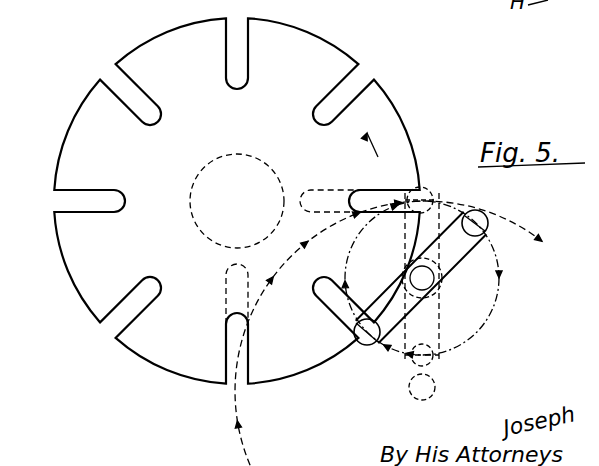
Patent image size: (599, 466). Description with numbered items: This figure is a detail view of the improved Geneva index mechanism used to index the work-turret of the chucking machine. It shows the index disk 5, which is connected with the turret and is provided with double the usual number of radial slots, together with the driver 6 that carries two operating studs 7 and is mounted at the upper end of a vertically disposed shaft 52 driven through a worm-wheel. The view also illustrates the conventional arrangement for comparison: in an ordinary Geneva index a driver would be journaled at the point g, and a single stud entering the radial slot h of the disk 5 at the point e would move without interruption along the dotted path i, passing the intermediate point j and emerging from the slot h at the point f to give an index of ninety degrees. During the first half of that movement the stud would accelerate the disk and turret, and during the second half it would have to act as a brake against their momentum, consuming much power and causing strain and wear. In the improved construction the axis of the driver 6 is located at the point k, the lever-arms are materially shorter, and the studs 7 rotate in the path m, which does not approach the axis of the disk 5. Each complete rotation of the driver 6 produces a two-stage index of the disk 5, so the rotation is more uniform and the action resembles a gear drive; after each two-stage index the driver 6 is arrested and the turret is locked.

The index disk 5 is at (236, 200).
The driver 6 is at (455, 268).
The operating studs 7 is at (368, 345).
The vertically disposed shaft 52 is at (433, 289).
The slot entry point e is at (240, 388).
The slot exit point f is at (412, 210).
The conventional driver journal point g is at (424, 381).
The radial slot h is at (316, 192).
The dotted path i is at (274, 291).
The intermediate point j is at (296, 253).
The driver axis point k is at (424, 276).
The stud path m is at (351, 250).